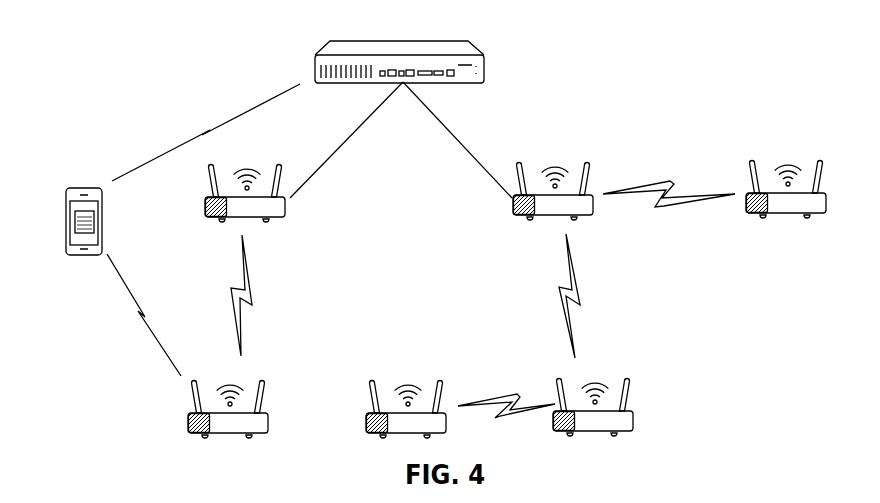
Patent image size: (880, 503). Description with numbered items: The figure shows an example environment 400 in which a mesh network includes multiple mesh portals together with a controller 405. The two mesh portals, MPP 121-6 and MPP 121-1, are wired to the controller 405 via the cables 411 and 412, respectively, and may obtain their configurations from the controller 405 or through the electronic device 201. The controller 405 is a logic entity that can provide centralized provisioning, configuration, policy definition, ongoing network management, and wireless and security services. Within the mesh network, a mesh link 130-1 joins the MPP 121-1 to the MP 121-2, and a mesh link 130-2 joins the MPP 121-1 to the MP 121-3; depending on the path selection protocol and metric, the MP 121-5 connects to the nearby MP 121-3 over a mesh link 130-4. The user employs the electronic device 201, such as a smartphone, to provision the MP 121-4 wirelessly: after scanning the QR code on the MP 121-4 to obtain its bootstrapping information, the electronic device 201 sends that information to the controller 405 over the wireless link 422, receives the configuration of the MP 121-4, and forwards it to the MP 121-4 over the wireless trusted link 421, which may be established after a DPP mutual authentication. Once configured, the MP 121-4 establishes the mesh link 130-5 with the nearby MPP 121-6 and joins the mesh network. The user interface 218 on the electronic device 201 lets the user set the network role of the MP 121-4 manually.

The example environment 400 is at (93, 62).
The controller 405 is at (446, 42).
The electronic device 201 is at (81, 189).
The user interface 218 is at (75, 211).
The cable 411 is at (361, 124).
The cable 412 is at (447, 129).
The wireless trusted link 421 is at (128, 287).
The wireless link 422 is at (186, 143).
The mesh portal (MPP) 121-1 is at (585, 166).
The mesh point (MP) 121-2 is at (817, 164).
The mesh point (MP) 121-3 is at (625, 382).
The mesh point (MP) 121-4 is at (258, 384).
The mesh point (MP) 121-5 is at (437, 384).
The mesh portal (MPP) 121-6 is at (275, 168).
The mesh link 130-1 is at (671, 183).
The mesh link 130-2 is at (578, 281).
The mesh link 130-4 is at (506, 395).
The mesh link 130-5 is at (250, 277).